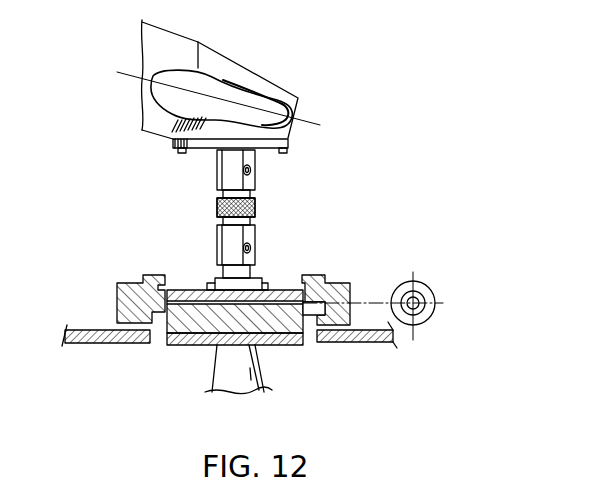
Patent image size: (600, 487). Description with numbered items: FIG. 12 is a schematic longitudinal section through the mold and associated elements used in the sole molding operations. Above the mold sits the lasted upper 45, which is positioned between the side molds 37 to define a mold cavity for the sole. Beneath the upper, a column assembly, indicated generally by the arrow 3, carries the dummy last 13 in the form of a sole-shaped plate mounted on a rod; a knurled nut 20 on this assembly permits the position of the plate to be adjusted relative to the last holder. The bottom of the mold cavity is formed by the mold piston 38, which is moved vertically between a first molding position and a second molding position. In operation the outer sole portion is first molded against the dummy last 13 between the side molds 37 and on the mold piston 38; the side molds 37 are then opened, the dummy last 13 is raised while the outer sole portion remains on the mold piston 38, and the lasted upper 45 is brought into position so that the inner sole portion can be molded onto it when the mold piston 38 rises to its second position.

The foot treadle assembly 3 is at (305, 243).
The dummy last 13 is at (218, 248).
The knurled nut 20 is at (255, 208).
The side molds 37 is at (158, 275).
The mold piston 38 is at (283, 346).
The lasted upper 45 is at (175, 98).